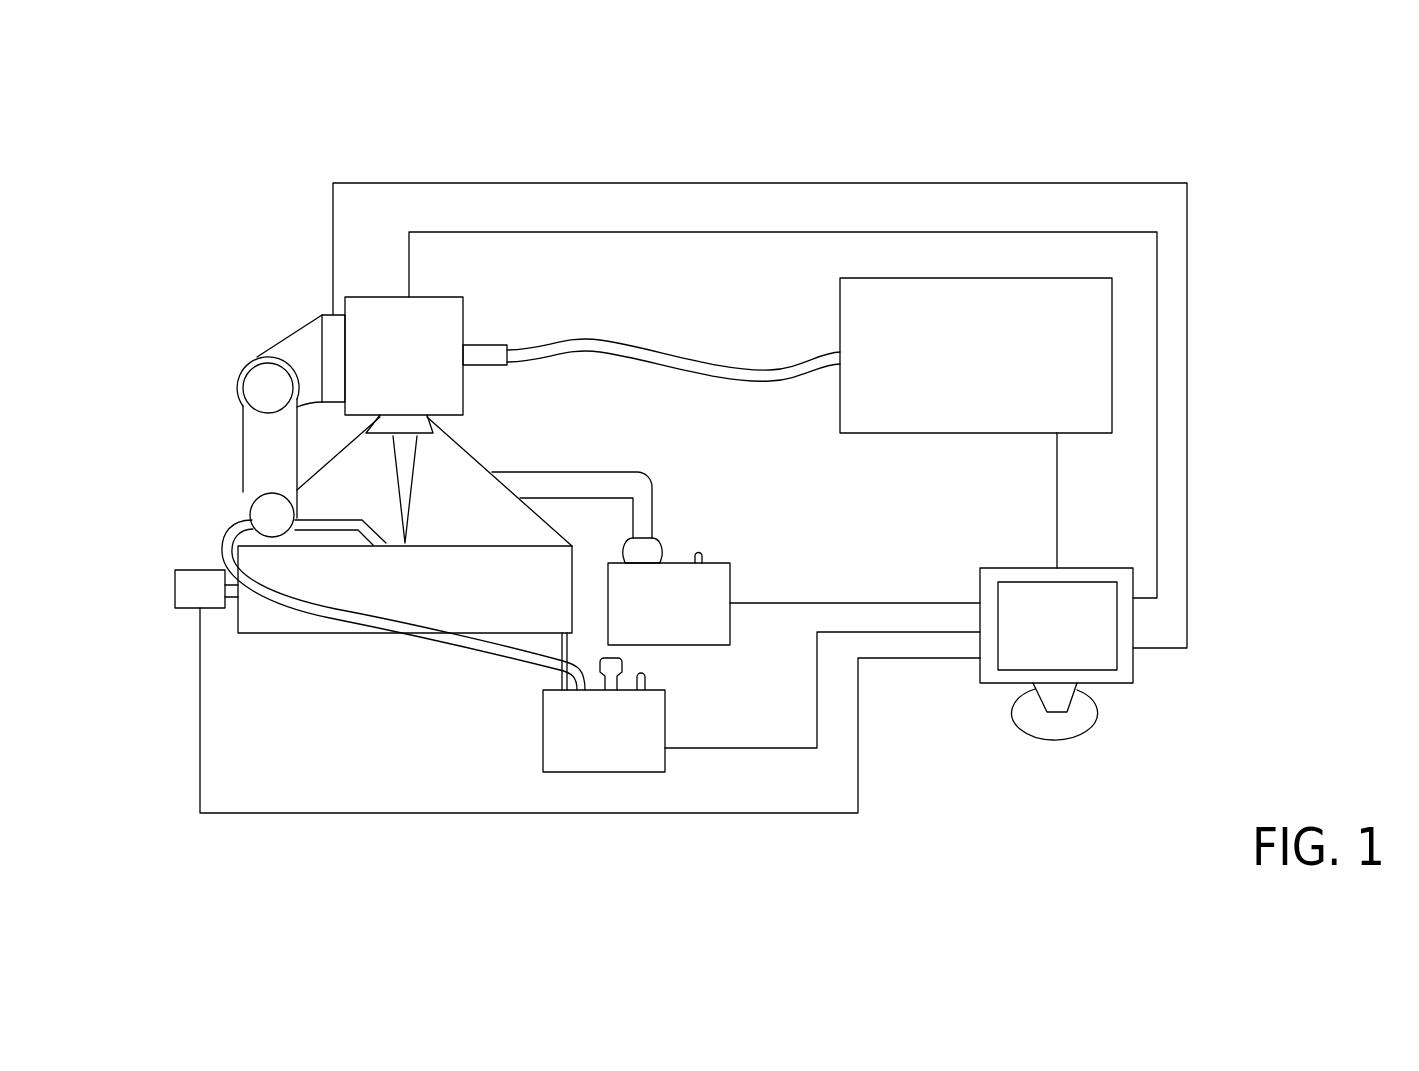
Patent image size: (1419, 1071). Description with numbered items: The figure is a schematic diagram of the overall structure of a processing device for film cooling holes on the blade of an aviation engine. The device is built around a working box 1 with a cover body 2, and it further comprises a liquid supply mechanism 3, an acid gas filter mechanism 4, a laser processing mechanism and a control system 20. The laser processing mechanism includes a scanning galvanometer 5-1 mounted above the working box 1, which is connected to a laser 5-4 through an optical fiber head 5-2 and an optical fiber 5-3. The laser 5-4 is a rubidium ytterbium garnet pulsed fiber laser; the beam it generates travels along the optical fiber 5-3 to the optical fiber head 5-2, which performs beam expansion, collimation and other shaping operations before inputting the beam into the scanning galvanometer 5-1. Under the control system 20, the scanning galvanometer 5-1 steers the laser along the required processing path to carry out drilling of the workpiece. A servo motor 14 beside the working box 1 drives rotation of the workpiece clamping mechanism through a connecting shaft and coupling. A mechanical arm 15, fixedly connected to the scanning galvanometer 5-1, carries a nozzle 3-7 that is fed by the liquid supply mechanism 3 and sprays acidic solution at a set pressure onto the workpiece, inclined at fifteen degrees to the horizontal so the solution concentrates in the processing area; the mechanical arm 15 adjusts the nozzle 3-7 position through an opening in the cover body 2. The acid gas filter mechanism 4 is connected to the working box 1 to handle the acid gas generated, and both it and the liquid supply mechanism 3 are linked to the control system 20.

The working box 1 is at (435, 607).
The cover body 2 is at (220, 412).
The liquid supply mechanism 3 is at (598, 772).
The nozzle 3-7 is at (363, 535).
The acid gas filter mechanism 4 is at (665, 645).
The scanning galvanometer 5-1 is at (360, 325).
The optical fiber head 5-2 is at (478, 353).
The optical fiber 5-3 is at (690, 365).
The laser 5-4 is at (1112, 348).
The servo motor 14 is at (190, 582).
The mechanical arm 15 is at (267, 387).
The control system 20 is at (1057, 625).